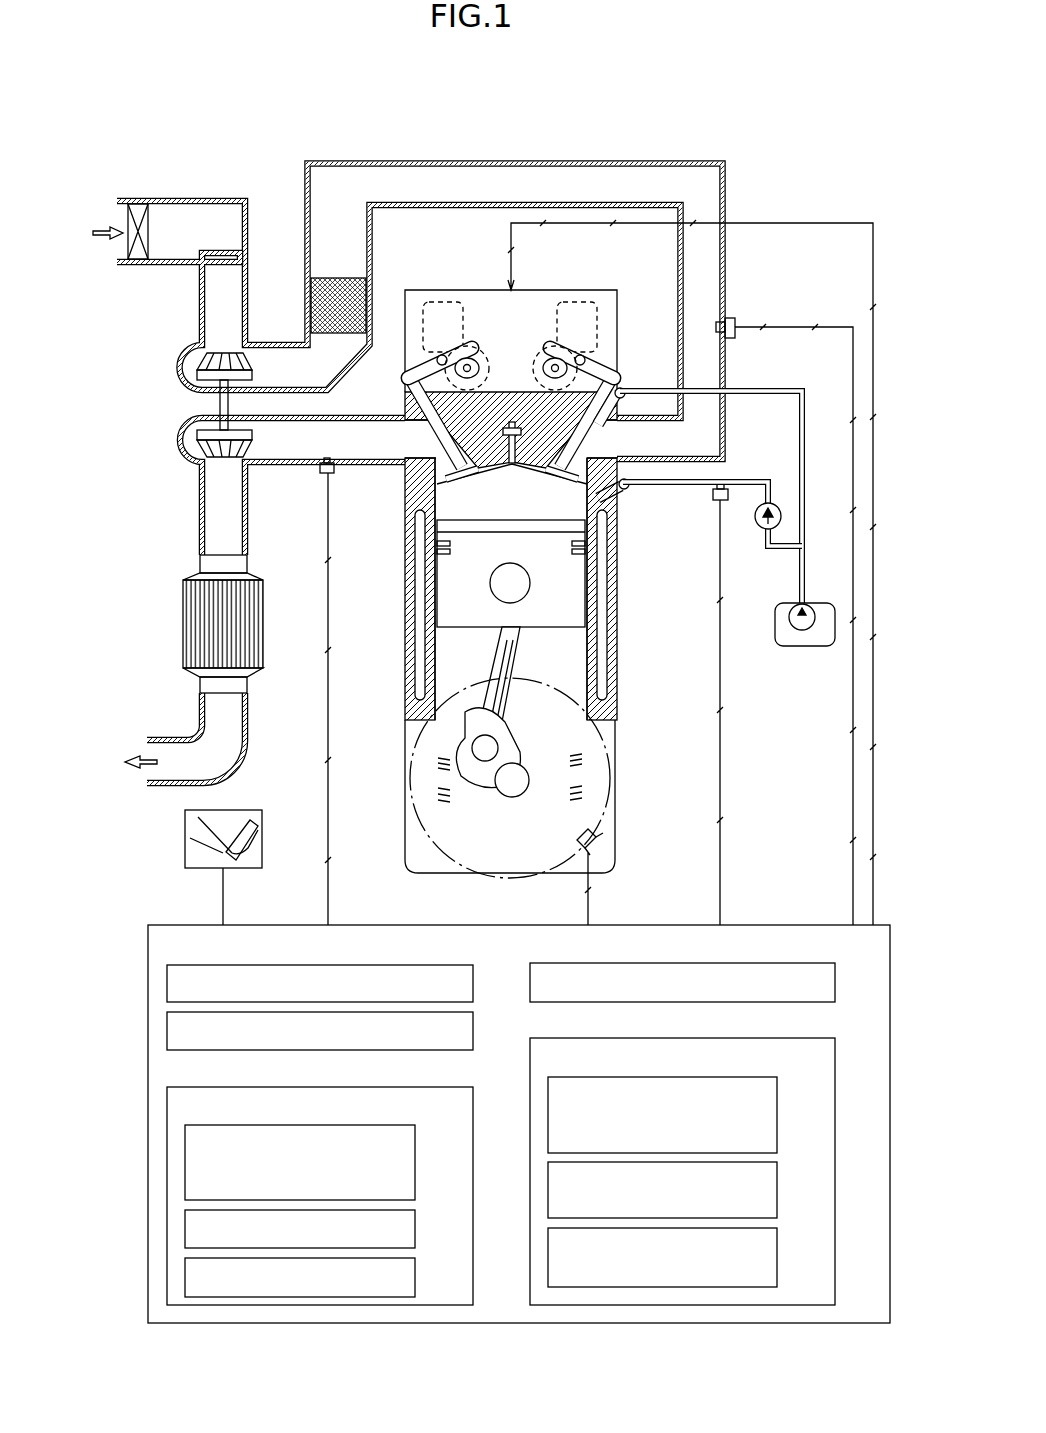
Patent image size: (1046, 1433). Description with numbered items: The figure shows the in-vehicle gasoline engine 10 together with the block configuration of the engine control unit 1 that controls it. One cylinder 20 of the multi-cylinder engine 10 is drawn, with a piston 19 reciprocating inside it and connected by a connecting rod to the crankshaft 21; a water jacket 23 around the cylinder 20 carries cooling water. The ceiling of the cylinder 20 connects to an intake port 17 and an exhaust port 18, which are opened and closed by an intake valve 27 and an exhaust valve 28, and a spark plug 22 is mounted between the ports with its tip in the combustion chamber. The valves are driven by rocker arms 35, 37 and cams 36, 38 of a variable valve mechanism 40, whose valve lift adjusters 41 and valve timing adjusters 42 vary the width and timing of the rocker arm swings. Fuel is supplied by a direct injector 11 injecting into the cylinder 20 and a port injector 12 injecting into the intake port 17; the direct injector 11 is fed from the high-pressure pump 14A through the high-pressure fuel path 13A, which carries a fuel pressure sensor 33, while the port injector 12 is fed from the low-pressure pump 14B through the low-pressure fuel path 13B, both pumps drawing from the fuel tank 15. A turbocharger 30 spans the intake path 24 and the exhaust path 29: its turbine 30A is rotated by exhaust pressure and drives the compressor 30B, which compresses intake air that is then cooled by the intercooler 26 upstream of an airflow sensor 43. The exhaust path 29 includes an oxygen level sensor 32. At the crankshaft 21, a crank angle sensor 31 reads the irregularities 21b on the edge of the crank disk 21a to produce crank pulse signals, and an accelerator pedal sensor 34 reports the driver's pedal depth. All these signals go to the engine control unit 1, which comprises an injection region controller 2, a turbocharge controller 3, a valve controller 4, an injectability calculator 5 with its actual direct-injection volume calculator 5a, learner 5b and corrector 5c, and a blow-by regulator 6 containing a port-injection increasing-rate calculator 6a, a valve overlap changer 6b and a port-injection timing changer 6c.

The engine control unit 1 is at (147, 958).
The injection region controller 2 is at (337, 983).
The turbocharge controller 3 is at (701, 982).
The valve controller 4 is at (337, 1031).
The injectability calculator 5 is at (337, 1196).
The actual direct-injection volume calculator 5a is at (326, 1162).
The learner 5b is at (326, 1229).
The corrector 5c is at (325, 1277).
The blow-by regulator 6 is at (701, 1171).
The port-injection increasing-rate calculator 6a is at (689, 1115).
The valve overlap changer 6b is at (689, 1190).
The port-injection timing changer 6c is at (688, 1257).
The engine 10 is at (224, 111).
The direct injector 11 is at (603, 505).
The port injector 12 is at (621, 386).
The high-pressure fuel path 13A is at (748, 480).
The low-pressure fuel path 13B is at (776, 388).
The high-pressure pump 14A is at (758, 530).
The low-pressure pump 14B is at (792, 628).
The fuel tank 15 is at (818, 647).
The intake port 17 is at (629, 489).
The exhaust port 18 is at (412, 478).
The piston 19 is at (577, 600).
The cylinder 20 is at (440, 605).
The crankshaft 21 is at (535, 783).
The crank disk 21a is at (460, 840).
The irregularities 21b is at (437, 800).
The spark plug 22 is at (505, 470).
The water jacket 23 is at (603, 682).
The intake path 24 is at (726, 278).
The intercooler 26 is at (320, 277).
The intake valve 27 is at (578, 391).
The exhaust valve 28 is at (407, 395).
The exhaust path 29 is at (198, 530).
The turbocharger 30 is at (168, 405).
The turbine 30A is at (195, 447).
The compressor 30B is at (198, 365).
The crank angle sensor 31 is at (597, 836).
The oxygen level sensor 32 is at (325, 478).
The fuel pressure sensor 33 is at (714, 500).
The accelerator pedal sensor 34 is at (185, 845).
The rocker arm 35 is at (609, 352).
The cam 36 is at (544, 372).
The rocker arm 37 is at (413, 378).
The cam 38 is at (480, 362).
The variable valve mechanism 40 is at (592, 280).
The valve lift adjuster 41 is at (443, 302).
The valve timing adjuster 42 is at (470, 300).
The airflow sensor 43 is at (732, 340).